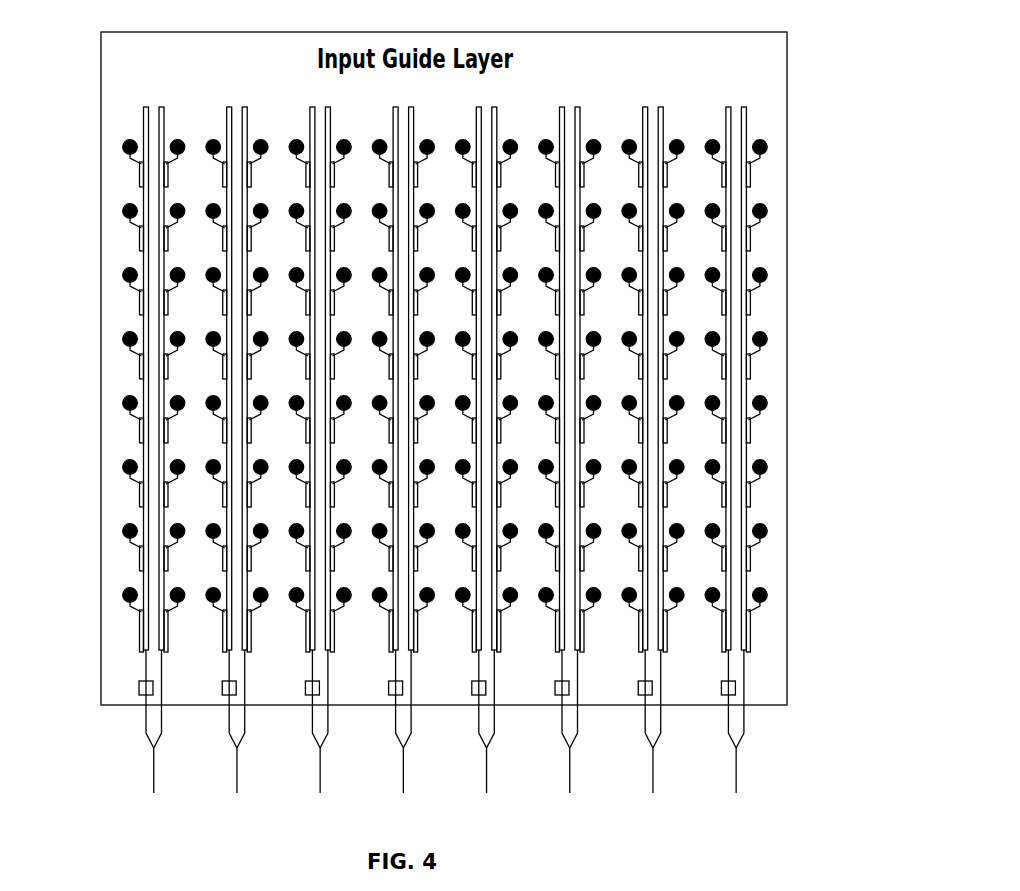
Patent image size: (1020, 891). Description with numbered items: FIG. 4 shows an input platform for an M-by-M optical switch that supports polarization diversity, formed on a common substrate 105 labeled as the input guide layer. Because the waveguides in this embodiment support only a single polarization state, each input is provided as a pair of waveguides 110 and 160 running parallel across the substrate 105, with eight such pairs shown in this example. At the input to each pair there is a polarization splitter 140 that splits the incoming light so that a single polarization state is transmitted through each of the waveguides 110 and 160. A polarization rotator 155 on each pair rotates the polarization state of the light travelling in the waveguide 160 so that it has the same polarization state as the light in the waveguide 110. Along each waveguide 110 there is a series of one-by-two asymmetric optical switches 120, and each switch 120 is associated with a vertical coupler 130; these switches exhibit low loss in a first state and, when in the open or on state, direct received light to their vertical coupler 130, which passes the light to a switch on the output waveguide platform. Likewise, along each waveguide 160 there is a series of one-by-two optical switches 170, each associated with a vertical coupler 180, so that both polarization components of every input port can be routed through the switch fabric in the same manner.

The common substrate 105 is at (782, 78).
The input optical waveguides 110 is at (453, 394).
The 1×2 asymmetric optical switches 120 is at (808, 591).
The vertical coupler 130 is at (331, 143).
The polarization splitter 140 is at (756, 776).
The polarization rotator 155 is at (139, 690).
The waveguides 160 is at (728, 718).
The 1×2 optical switches 170 is at (86, 648).
The vertical coupler 180 is at (142, 167).